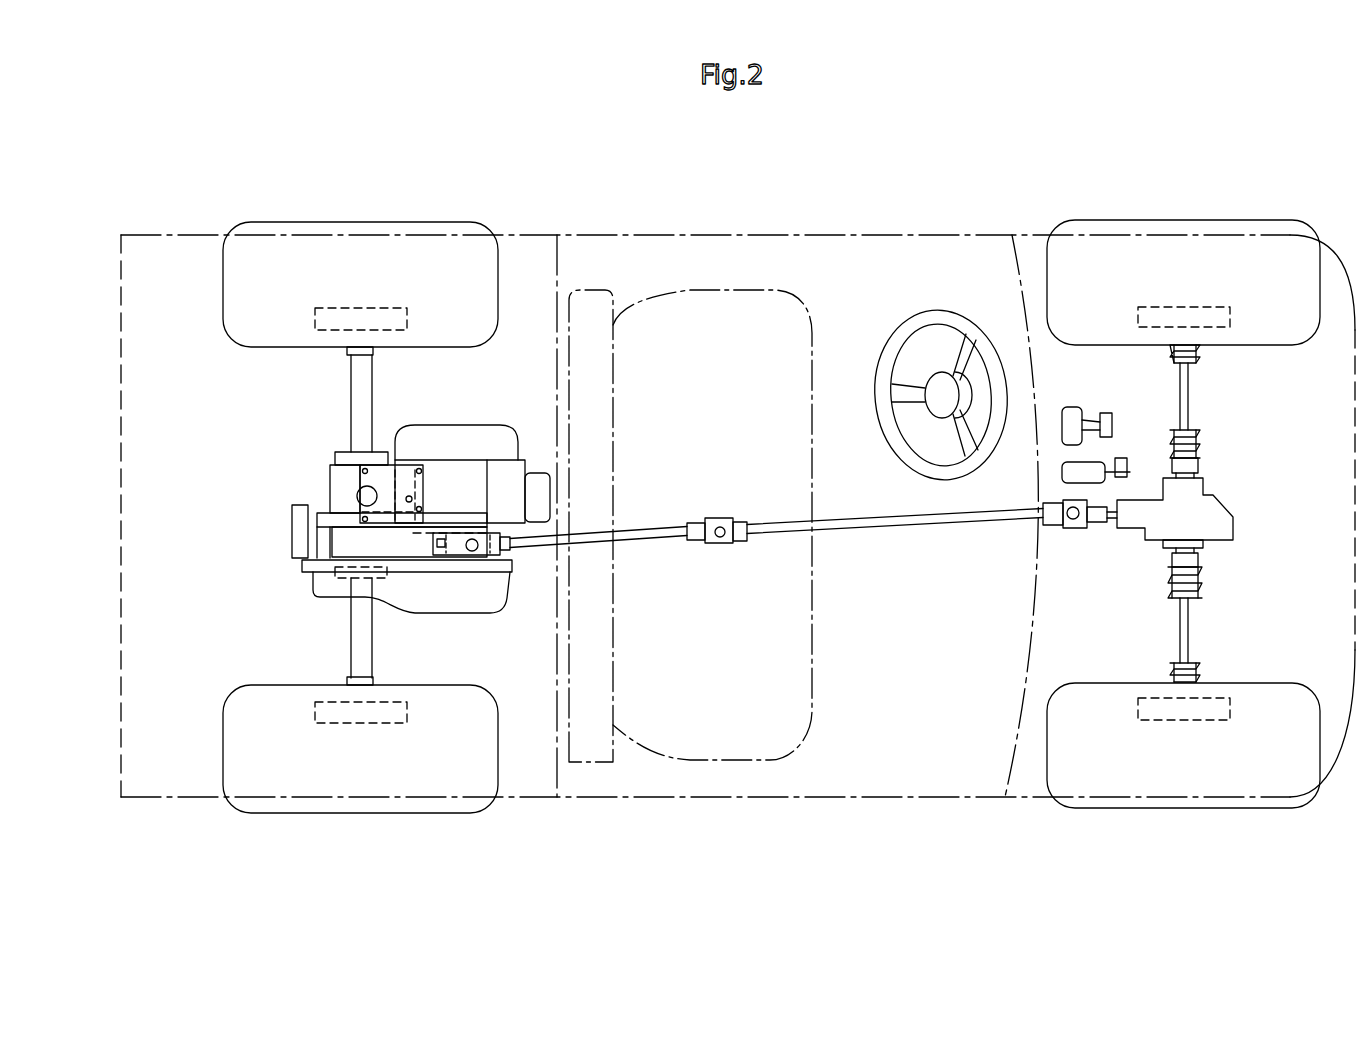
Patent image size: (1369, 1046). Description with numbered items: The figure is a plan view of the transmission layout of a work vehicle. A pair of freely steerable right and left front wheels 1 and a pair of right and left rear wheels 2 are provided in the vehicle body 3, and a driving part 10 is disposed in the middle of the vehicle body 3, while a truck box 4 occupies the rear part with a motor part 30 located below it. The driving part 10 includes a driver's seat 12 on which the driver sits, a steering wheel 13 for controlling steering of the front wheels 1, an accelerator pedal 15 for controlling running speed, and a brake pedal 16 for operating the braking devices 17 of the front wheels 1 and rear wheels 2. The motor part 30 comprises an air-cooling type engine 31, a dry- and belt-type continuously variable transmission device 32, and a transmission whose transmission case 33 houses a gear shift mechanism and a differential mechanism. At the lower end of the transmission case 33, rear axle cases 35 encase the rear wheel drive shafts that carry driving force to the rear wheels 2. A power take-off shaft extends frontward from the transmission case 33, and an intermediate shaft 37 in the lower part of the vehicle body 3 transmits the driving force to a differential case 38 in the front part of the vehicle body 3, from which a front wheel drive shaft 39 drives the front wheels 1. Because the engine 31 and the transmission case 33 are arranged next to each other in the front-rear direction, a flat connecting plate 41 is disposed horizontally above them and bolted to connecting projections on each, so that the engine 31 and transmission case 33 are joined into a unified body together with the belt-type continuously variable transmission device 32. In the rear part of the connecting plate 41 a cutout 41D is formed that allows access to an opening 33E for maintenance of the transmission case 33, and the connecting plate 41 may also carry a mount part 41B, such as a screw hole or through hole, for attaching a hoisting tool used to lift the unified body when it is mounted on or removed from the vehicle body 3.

The front wheels 1 is at (1268, 338).
The rear wheels 2 is at (222, 282).
The vehicle body 3 is at (633, 232).
The truck box 4 is at (192, 235).
The driving part 10 is at (847, 280).
The driver's seat 12 is at (812, 703).
The steering wheel 13 is at (897, 450).
The accelerator pedal 15 is at (1062, 470).
The brake pedal 16 is at (1068, 410).
The braking devices 17 is at (364, 306).
The motor part 30 is at (267, 430).
The engine 31 is at (518, 470).
The continuously variable transmission device 32 is at (467, 595).
The transmission case 33 is at (340, 502).
The opening 33E is at (360, 490).
The rear axle cases 35 is at (350, 385).
The intermediate shaft 37 is at (643, 535).
The differential case 38 is at (1233, 520).
The front wheel drive shaft 39 is at (1188, 398).
The connecting plate 41 is at (377, 477).
The mount part 41B is at (410, 500).
The cutout 41D is at (360, 495).